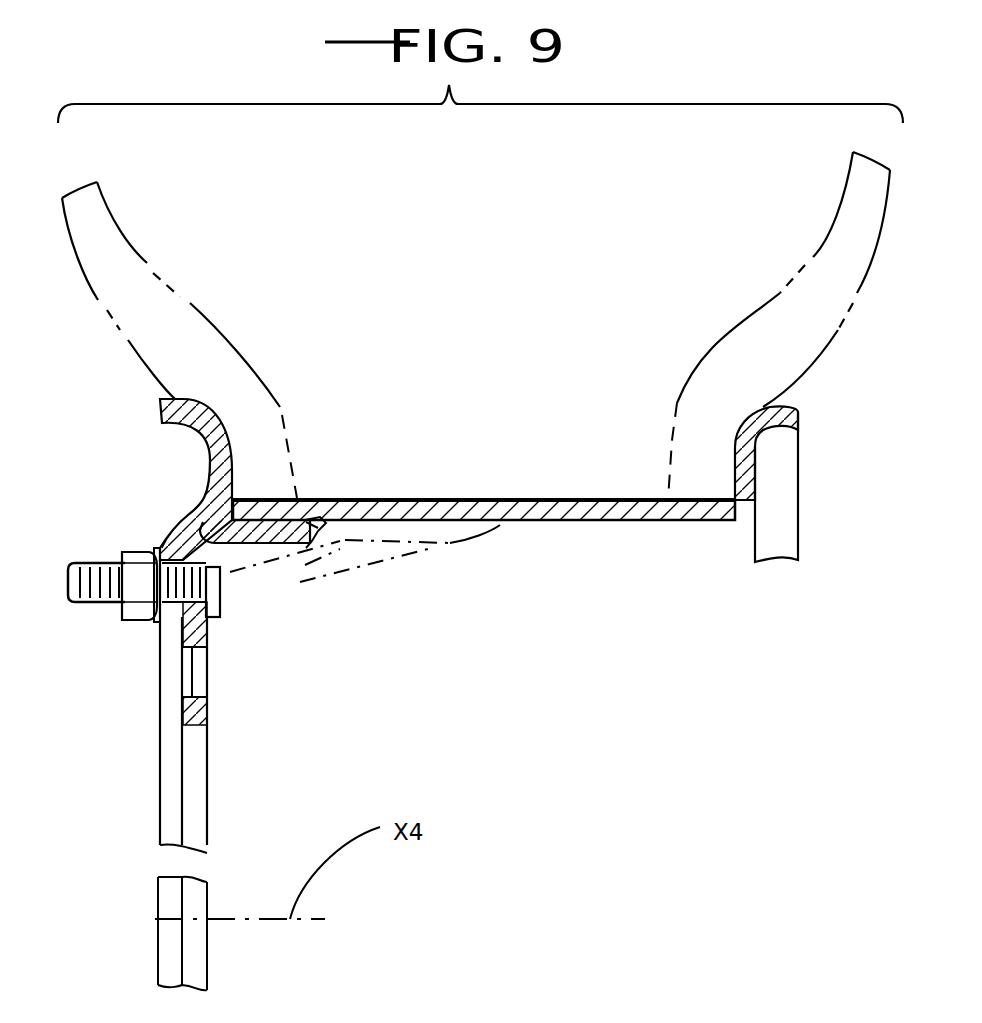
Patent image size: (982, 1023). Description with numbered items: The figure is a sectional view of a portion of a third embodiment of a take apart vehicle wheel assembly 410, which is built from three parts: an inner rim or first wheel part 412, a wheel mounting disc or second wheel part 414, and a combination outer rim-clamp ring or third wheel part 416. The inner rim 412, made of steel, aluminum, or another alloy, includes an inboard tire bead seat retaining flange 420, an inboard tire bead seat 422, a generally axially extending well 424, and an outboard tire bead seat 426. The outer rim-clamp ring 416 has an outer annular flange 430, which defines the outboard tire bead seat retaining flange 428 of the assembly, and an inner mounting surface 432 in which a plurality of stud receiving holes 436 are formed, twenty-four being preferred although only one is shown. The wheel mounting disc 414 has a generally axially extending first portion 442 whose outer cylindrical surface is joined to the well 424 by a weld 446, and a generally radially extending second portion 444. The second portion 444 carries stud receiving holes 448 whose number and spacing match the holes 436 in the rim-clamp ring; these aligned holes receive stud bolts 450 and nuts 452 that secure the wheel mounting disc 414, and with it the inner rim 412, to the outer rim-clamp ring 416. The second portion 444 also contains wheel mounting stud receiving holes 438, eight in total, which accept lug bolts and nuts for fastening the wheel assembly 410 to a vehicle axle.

The take apart vehicle wheel assembly 410 is at (124, 402).
The inner rim 412 is at (644, 565).
The wheel mounting disc 414 is at (214, 546).
The outer rim-clamp ring 416 is at (183, 505).
The inboard tire bead seat retaining flange 420 is at (737, 433).
The inboard tire bead seat 422 is at (703, 500).
The well 424 is at (500, 498).
The outboard tire bead seat 426 is at (270, 497).
The outboard tire bead seat retaining flange 428 is at (215, 426).
The outer annular flange 430 is at (183, 438).
The inner mounting surface 432 is at (155, 620).
The stud receiving holes 436 is at (155, 583).
The wheel mounting stud receiving holes 438 is at (180, 693).
The first portion 442 is at (288, 533).
The second portion 444 is at (207, 710).
The weld 446 is at (320, 520).
The stud receiving holes 448 is at (207, 638).
The stud bolts 450 is at (67, 575).
The nuts 452 is at (137, 552).